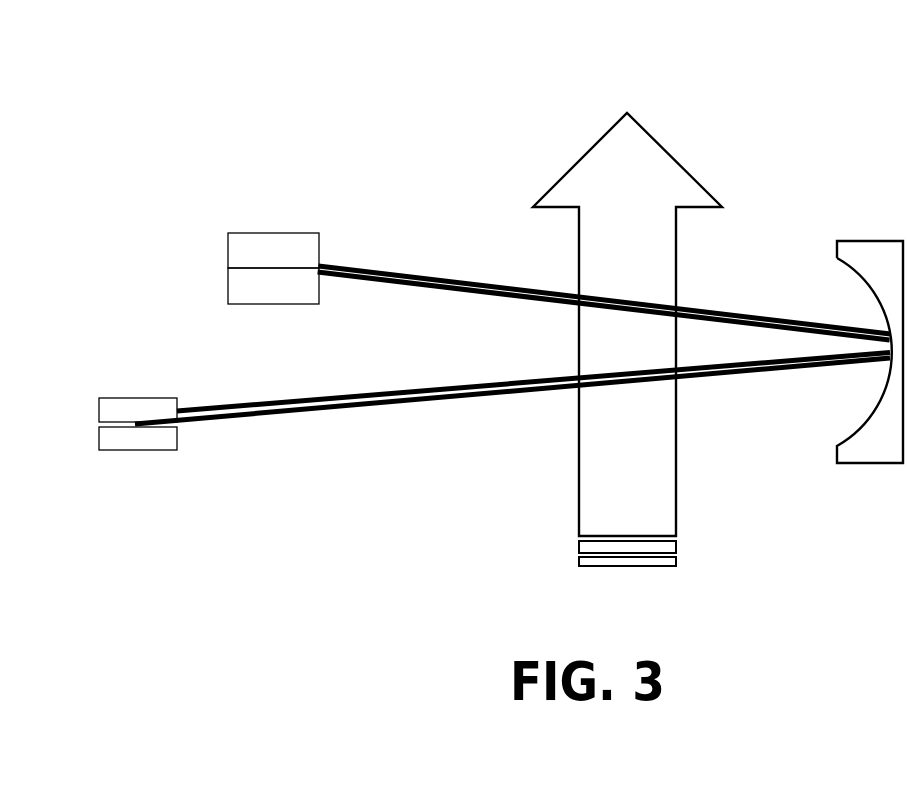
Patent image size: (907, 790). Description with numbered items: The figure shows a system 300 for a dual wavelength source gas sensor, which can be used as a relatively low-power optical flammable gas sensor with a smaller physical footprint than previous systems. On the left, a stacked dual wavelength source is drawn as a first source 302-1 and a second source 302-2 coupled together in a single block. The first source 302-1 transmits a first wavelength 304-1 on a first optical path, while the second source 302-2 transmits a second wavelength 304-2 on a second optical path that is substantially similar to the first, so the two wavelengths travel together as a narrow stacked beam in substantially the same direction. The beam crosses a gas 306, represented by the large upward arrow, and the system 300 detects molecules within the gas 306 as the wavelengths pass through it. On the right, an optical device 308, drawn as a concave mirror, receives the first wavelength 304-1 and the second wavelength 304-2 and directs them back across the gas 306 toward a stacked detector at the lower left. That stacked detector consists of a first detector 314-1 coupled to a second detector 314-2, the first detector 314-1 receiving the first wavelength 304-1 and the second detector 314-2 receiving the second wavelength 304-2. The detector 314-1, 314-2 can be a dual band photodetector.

The system for a dual wavelength source gas sensor 300 is at (793, 93).
The first source 302-1 is at (292, 233).
The second source 302-2 is at (302, 304).
The first wavelength 304-1 is at (428, 277).
The second wavelength 304-2 is at (447, 287).
The gas 306 is at (676, 262).
The optical device 308 is at (877, 241).
The first detector 314-1 is at (177, 400).
The second detector 314-2 is at (177, 436).